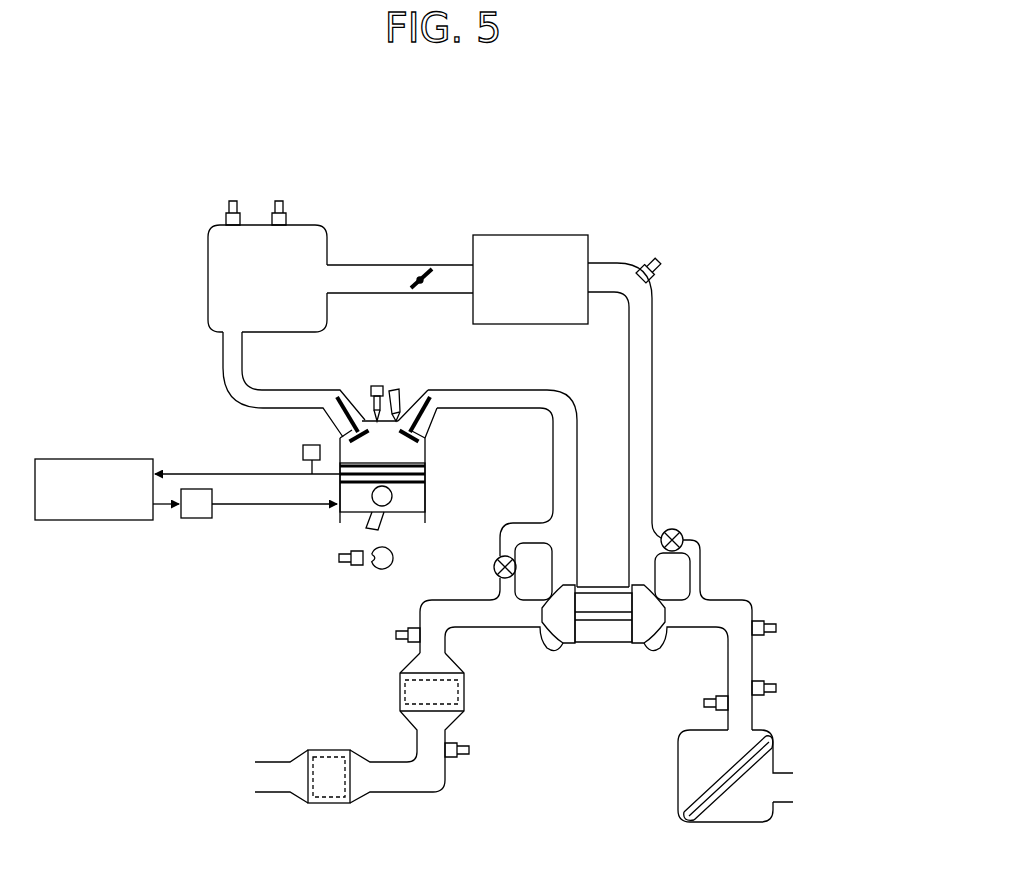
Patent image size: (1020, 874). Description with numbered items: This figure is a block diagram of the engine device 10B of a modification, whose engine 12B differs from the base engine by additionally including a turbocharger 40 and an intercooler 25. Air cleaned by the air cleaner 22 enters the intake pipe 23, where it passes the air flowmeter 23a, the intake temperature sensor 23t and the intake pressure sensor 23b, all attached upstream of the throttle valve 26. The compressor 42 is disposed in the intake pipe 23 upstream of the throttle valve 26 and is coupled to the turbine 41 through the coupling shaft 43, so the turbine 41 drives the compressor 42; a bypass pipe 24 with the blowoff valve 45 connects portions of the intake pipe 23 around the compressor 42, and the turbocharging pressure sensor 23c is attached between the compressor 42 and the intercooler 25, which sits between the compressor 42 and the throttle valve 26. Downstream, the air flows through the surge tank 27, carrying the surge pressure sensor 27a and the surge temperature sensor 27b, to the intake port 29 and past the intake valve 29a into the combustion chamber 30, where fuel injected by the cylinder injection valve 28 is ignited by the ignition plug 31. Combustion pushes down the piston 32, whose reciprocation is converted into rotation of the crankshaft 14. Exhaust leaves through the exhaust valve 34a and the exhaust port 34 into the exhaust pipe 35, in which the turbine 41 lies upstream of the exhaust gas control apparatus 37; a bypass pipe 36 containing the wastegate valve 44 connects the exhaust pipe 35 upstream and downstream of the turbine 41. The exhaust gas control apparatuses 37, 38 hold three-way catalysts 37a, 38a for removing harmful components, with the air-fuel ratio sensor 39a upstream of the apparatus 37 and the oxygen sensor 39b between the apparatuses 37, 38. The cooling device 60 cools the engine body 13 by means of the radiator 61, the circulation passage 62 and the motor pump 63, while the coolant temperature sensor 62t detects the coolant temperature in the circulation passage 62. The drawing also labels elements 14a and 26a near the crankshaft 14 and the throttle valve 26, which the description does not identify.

The engine device 10B is at (674, 140).
The engine 12B is at (609, 200).
The engine body 13 is at (434, 446).
The crankshaft 14 is at (370, 566).
The crank angle sensor 14a is at (337, 558).
The air cleaner 22 is at (678, 783).
The intake pipe 23 is at (655, 385).
The air flowmeter 23a is at (703, 703).
The intake pressure sensor 23b is at (778, 628).
The turbocharging pressure sensor 23c is at (658, 274).
The intake temperature sensor 23t is at (778, 688).
The bypass pipe 24 is at (703, 560).
The intercooler 25 is at (532, 235).
The throttle valve 26 is at (429, 266).
The throttle position sensor 26a is at (413, 282).
The surge tank 27 is at (208, 290).
The surge pressure sensor 27a is at (279, 210).
The surge temperature sensor 27b is at (233, 210).
The cylinder injection valve 28 is at (376, 385).
The intake port 29 is at (336, 404).
The intake valve 29a is at (345, 432).
The combustion chamber 30 is at (395, 452).
The ignition plug 31 is at (398, 388).
The piston 32 is at (410, 497).
The exhaust port 34 is at (430, 404).
The exhaust valve 34a is at (417, 432).
The exhaust pipe 35 is at (500, 390).
The bypass pipe 36 is at (525, 542).
The exhaust gas control apparatus 37 is at (395, 728).
The catalyst 37a is at (405, 693).
The exhaust gas control apparatus 38 is at (299, 789).
The catalyst 38a is at (330, 752).
The air-fuel ratio sensor 39a is at (395, 635).
The oxygen sensor 39b is at (458, 760).
The turbocharger 40 is at (563, 644).
The turbine 41 is at (550, 628).
The compressor 42 is at (658, 630).
The coupling shaft 43 is at (599, 610).
The wastegate valve 44 is at (493, 567).
The blowoff valve 45 is at (675, 528).
The cooling device 60 is at (187, 475).
The radiator 61 is at (93, 459).
The circulation passage 62 is at (196, 473).
The coolant temperature sensor 62t is at (303, 452).
The motor pump 63 is at (196, 518).